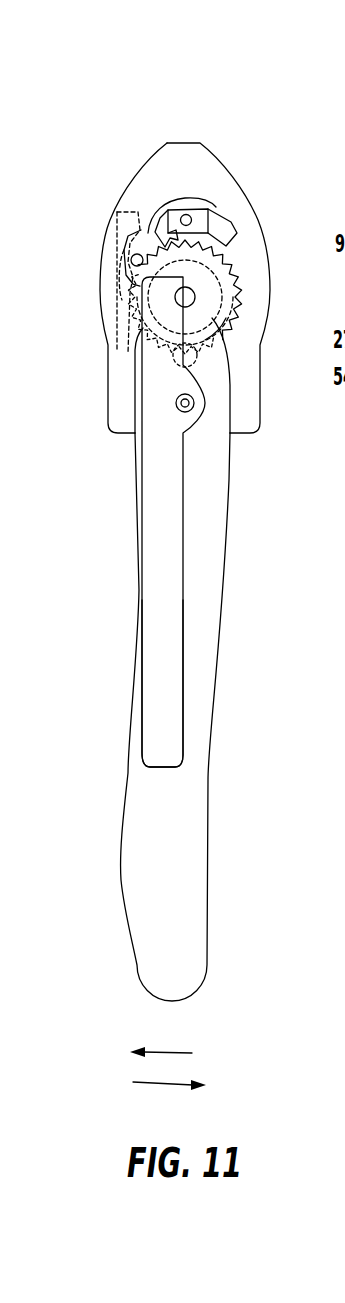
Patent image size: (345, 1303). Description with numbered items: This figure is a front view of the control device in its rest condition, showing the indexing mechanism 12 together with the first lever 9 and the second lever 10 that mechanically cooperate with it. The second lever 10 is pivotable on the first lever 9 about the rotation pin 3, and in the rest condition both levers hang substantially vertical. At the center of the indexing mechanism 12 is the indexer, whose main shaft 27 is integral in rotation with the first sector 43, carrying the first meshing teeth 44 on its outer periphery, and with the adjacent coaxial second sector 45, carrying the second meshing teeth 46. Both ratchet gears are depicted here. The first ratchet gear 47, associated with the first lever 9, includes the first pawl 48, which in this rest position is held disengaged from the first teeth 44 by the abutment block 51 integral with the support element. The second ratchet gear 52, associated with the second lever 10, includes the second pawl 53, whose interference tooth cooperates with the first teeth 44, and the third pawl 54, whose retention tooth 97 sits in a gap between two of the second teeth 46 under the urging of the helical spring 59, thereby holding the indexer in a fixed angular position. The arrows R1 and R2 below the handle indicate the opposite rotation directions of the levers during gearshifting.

The indexing mechanism 12 is at (240, 117).
The first ratchet gear 47 is at (82, 116).
The second ratchet gear 52 is at (146, 78).
The first pawl 48 is at (172, 216).
The second pawl 53 is at (126, 226).
The abutment block 51 is at (226, 229).
The first meshing teeth 44 is at (226, 250).
The second meshing teeth 46 is at (216, 264).
The second sector 45 is at (215, 298).
The first sector 43 is at (218, 332).
The retention tooth 97 is at (140, 302).
The main shaft 27 is at (172, 307).
The third pawl 54 is at (148, 343).
The helical spring 59 is at (200, 364).
The rotation pin 3 is at (176, 418).
The second lever 10 is at (153, 722).
The first lever 9 is at (155, 960).
The first rotation direction R1 is at (175, 1052).
The second rotation direction R2 is at (162, 1088).